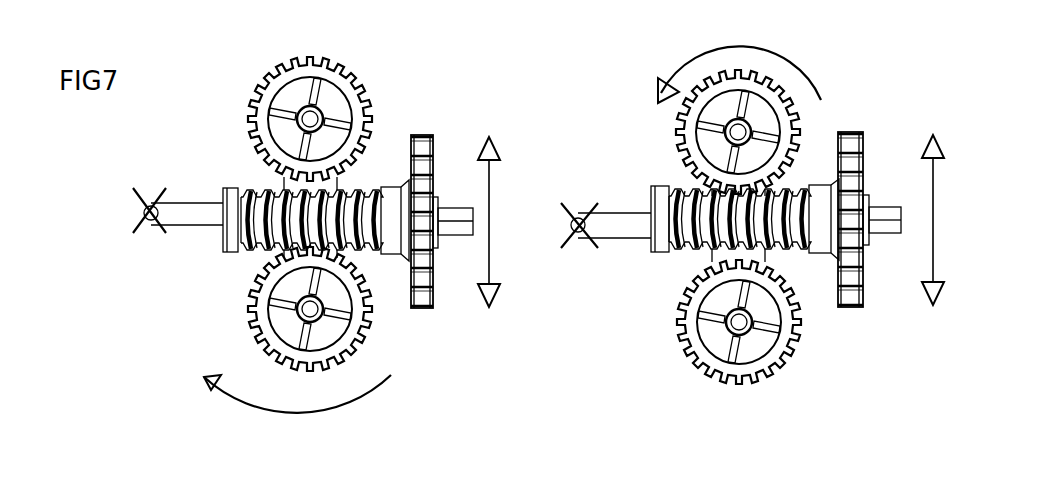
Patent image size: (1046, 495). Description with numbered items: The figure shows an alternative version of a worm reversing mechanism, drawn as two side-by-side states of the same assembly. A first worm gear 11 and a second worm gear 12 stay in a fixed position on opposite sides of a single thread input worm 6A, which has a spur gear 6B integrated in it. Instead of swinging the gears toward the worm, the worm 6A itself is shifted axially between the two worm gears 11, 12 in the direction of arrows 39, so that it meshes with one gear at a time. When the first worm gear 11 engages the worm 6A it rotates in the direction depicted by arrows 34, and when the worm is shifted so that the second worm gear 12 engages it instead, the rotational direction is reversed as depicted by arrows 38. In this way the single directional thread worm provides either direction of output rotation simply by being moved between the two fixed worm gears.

The first worm gear 11 is at (357, 98).
The second worm gear 12 is at (357, 325).
The single thread input worm 6A is at (237, 250).
The spur gear 6B is at (427, 135).
The arrows 39 is at (721, 221).
The arrows 38 is at (297, 414).
The arrows 34 is at (739, 58).